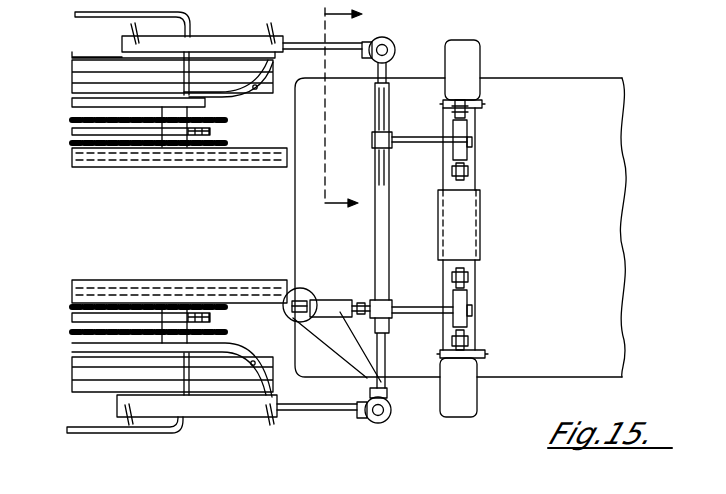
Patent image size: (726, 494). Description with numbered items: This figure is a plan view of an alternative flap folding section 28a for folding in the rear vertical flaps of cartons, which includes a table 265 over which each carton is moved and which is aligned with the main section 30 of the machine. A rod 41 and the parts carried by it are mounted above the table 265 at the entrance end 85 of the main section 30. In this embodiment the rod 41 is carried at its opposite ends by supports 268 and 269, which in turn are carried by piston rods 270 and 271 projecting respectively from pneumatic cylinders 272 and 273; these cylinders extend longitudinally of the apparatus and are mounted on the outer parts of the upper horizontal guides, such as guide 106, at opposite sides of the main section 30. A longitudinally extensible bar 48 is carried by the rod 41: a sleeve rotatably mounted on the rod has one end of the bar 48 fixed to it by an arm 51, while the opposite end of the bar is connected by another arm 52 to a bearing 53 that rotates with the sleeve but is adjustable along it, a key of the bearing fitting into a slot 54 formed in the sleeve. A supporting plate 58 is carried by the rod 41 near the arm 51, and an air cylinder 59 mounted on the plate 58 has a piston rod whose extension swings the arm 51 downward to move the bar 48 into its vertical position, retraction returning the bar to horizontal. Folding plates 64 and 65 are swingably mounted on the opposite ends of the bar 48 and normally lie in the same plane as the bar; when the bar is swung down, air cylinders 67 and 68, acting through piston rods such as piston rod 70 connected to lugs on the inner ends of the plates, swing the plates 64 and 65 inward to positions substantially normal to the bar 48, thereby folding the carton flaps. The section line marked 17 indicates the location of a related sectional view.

The section line 17- 17 is at (356, 118).
The alternative flap folding section 28a is at (486, 36).
The main section 30 is at (66, 185).
The rod 41 is at (384, 348).
The longitudinally extensible bar 48 is at (476, 278).
The arm 51 is at (408, 308).
The arm 52 is at (423, 138).
The bearing 53 is at (373, 141).
The slot 54 is at (380, 97).
The supporting plate 58 is at (334, 350).
The air cylinder 59 is at (347, 292).
The folding plate 64 is at (478, 398).
The folding plate 65 is at (481, 59).
The air cylinder 67 is at (467, 301).
The air cylinder 68 is at (467, 155).
The piston rod 70 is at (467, 120).
The entrance end 85 is at (288, 254).
The upper horizontal guide 106 is at (237, 92).
The table 265 is at (619, 237).
The support 268 is at (377, 423).
The support 269 is at (388, 39).
The piston rod 270 is at (320, 408).
The piston rod 271 is at (310, 41).
The pneumatic cylinder 272 is at (205, 418).
The pneumatic cylinder 273 is at (241, 36).